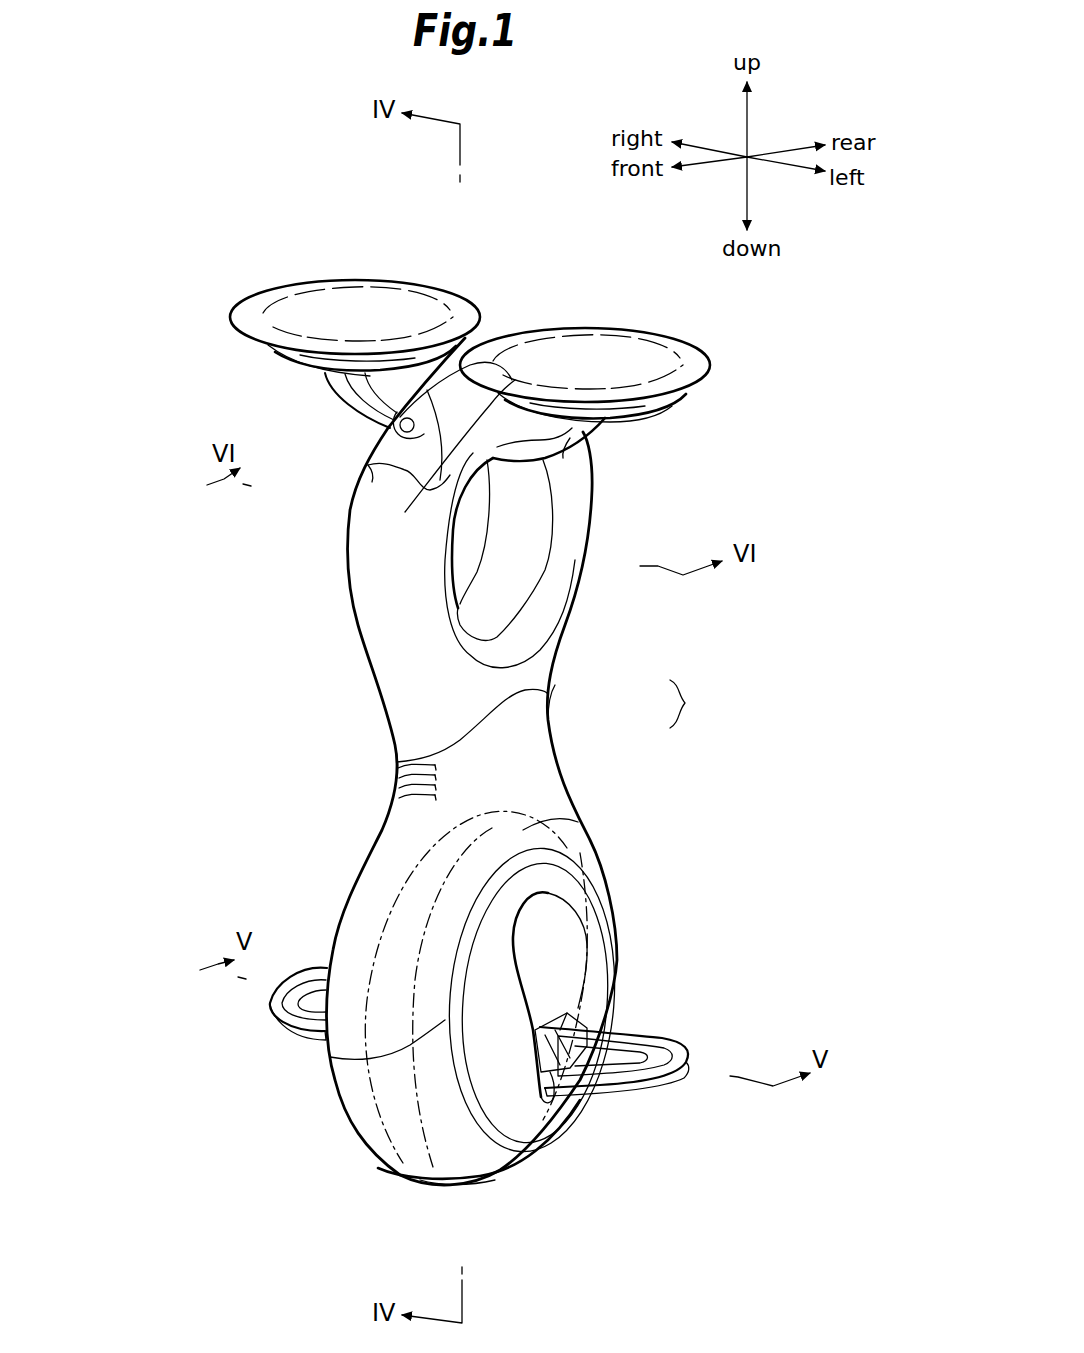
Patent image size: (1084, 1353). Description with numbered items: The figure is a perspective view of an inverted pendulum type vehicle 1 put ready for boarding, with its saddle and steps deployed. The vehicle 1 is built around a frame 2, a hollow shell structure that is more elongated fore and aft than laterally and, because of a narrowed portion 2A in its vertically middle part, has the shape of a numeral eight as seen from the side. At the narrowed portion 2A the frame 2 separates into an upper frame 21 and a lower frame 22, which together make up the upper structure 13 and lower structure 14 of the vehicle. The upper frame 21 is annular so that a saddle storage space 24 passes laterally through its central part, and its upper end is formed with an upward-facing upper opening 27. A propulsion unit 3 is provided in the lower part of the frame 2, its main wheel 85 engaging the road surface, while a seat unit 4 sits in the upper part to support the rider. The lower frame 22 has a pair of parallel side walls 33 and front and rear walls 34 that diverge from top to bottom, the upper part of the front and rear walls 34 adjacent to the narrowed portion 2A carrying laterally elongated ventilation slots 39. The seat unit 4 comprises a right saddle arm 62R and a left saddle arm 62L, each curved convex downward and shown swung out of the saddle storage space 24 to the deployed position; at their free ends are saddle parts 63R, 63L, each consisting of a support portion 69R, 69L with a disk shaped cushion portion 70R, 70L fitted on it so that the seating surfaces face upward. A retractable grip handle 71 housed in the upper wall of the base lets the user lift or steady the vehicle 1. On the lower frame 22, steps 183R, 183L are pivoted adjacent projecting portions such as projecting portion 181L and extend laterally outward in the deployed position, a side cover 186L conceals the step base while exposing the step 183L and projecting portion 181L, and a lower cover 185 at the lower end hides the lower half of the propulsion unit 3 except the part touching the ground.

The inverted pendulum type vehicle 1 is at (227, 179).
The frame 2 is at (691, 704).
The narrowed portion 2A is at (388, 752).
The propulsion unit 3 is at (366, 1062).
The seat unit 4 is at (576, 311).
The upper structure 13 is at (362, 567).
The lower structure 14 is at (332, 849).
The upper frame 21 is at (545, 672).
The lower frame 22 is at (540, 755).
The saddle storage space 24 is at (522, 577).
The upper opening 27 is at (417, 472).
The side wall 33 is at (523, 830).
The front and rear walls 34 is at (355, 912).
The ventilation slots 39 is at (398, 768).
The right saddle arm 62R is at (346, 405).
The left saddle arm 62L is at (594, 435).
The right saddle part 63R is at (381, 300).
The left saddle part 63L is at (631, 337).
The right support portion 69R is at (288, 357).
The left support portion 69L is at (642, 410).
The right cushion portion 70R is at (316, 298).
The left cushion portion 70L is at (685, 345).
The grip handle 71 is at (455, 380).
The main wheel 85 is at (462, 1190).
The left projecting portion 181L is at (566, 1018).
The right step 183R is at (278, 1000).
The left step 183L is at (680, 1062).
The lower cover 185 is at (372, 1140).
The left side cover 186L is at (612, 952).